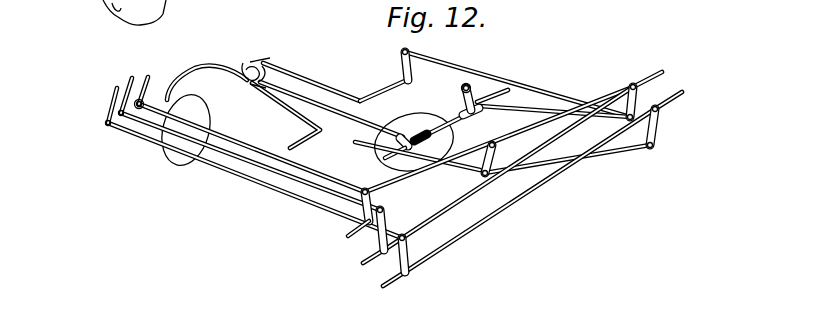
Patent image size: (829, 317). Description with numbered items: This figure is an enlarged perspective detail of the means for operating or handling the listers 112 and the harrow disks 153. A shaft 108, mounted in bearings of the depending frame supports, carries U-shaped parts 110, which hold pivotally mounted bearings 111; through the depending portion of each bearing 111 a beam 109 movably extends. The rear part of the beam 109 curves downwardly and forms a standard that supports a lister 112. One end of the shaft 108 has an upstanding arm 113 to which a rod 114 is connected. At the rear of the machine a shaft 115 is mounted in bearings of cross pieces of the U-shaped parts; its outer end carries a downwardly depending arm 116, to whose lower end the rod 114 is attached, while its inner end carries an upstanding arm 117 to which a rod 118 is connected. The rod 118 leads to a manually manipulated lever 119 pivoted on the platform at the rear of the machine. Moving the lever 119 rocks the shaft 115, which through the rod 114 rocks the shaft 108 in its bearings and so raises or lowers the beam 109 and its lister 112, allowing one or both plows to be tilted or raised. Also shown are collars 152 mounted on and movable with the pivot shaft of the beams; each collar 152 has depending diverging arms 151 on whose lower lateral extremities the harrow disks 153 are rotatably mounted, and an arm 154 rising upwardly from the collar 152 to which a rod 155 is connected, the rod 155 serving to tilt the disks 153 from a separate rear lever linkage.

The shaft 108 is at (387, 90).
The beam 109 is at (390, 128).
The U-shaped part 110 is at (320, 80).
The bearing 111 is at (257, 62).
The lister 112 is at (167, 160).
The upstanding arm 113 is at (413, 63).
The rod 114 is at (515, 78).
The shaft 115 is at (647, 75).
The depending arm 116 is at (655, 117).
The upstanding arm 117 is at (363, 253).
The rod 118 is at (280, 172).
The lever 119 is at (128, 98).
The depending diverging arm 151 is at (447, 115).
The collar 152 is at (480, 118).
The harrow disk 153 is at (402, 170).
The arm 154 is at (470, 83).
The rod 155 is at (547, 97).